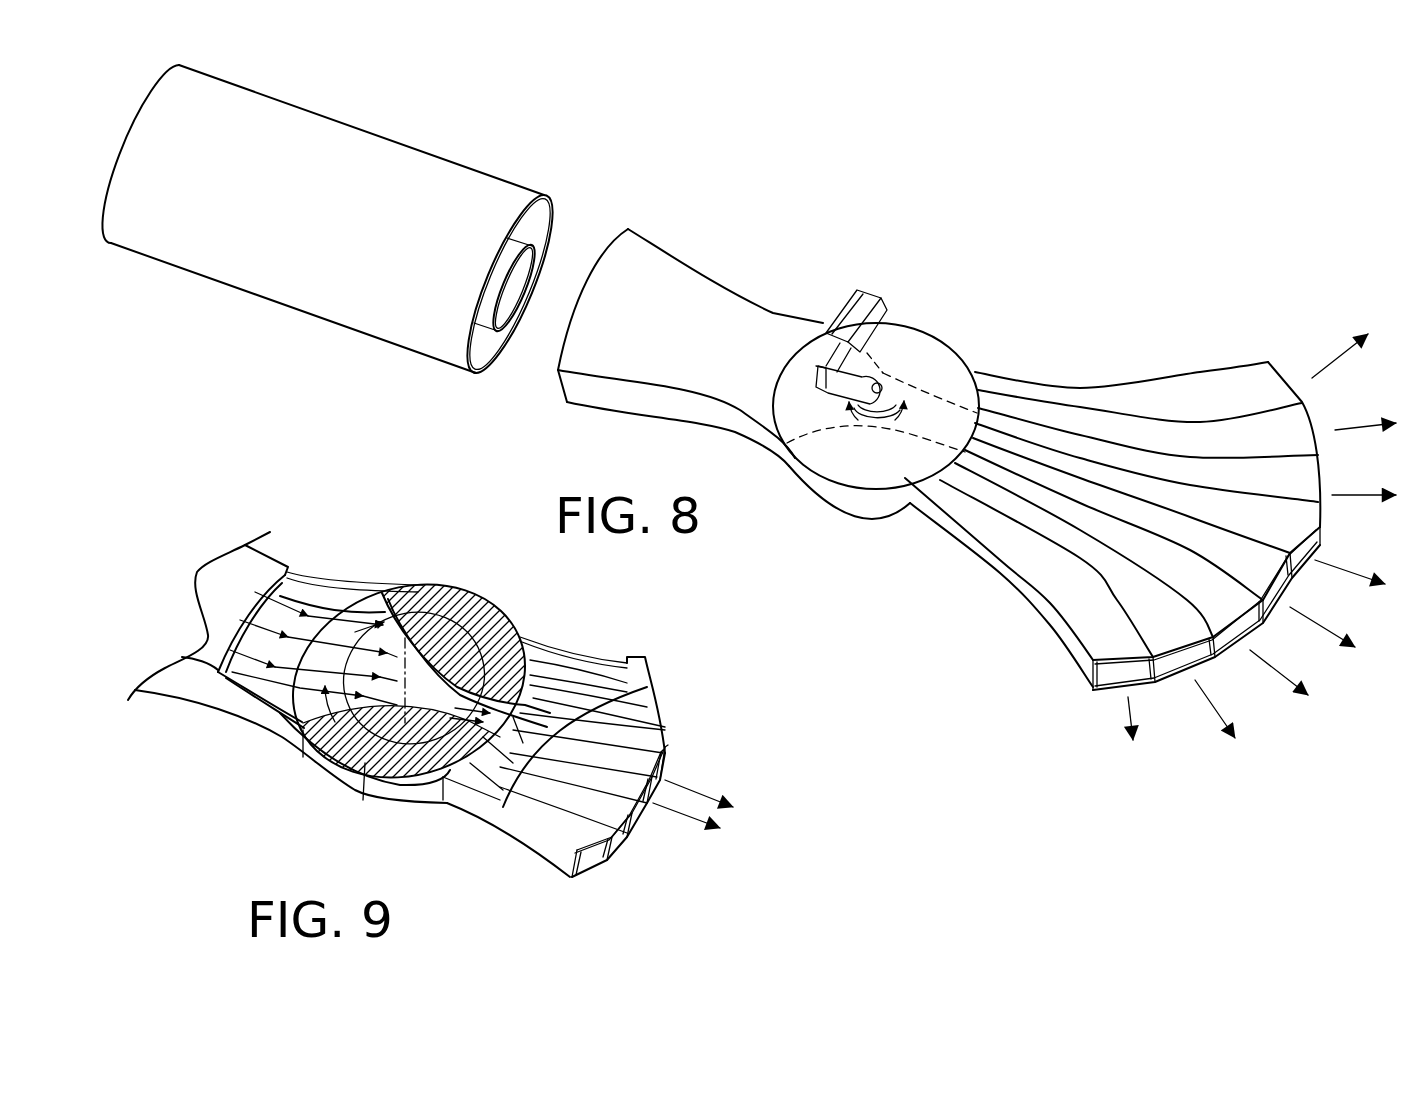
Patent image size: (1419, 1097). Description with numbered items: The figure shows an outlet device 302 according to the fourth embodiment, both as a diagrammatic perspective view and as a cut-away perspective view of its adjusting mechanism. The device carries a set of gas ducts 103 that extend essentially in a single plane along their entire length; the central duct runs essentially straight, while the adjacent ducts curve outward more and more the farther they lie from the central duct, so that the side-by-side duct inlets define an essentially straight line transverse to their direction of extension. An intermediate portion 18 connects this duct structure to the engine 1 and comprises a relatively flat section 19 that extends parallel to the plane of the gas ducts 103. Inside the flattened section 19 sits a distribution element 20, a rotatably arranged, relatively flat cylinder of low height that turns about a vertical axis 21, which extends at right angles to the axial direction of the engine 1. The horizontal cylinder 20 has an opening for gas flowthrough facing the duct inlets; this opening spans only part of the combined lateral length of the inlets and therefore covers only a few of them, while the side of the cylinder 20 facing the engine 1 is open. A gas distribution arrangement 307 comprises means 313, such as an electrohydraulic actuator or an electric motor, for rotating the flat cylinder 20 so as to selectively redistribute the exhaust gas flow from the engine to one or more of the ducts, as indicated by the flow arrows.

In FIG. 8, the engine 1 is at (455, 178).
In FIG. 8, the intermediate portion 18 is at (688, 277).
In FIG. 8, the flat section 19 is at (903, 337).
In FIG. 8, the distribution element 20 is at (853, 468).
In FIG. 9, the distribution element 20 is at (427, 608).
In FIG. 8, the vertical axis 21 is at (893, 383).
In FIG. 9, the vertical axis 21 is at (372, 748).
In FIG. 8, the outlet device 302 is at (838, 213).
In FIG. 8, the gas distribution arrangement 307 is at (892, 272).
In FIG. 8, the means for rotation 313 is at (860, 313).
In FIG. 8, the gas ducts 103 is at (1055, 565).